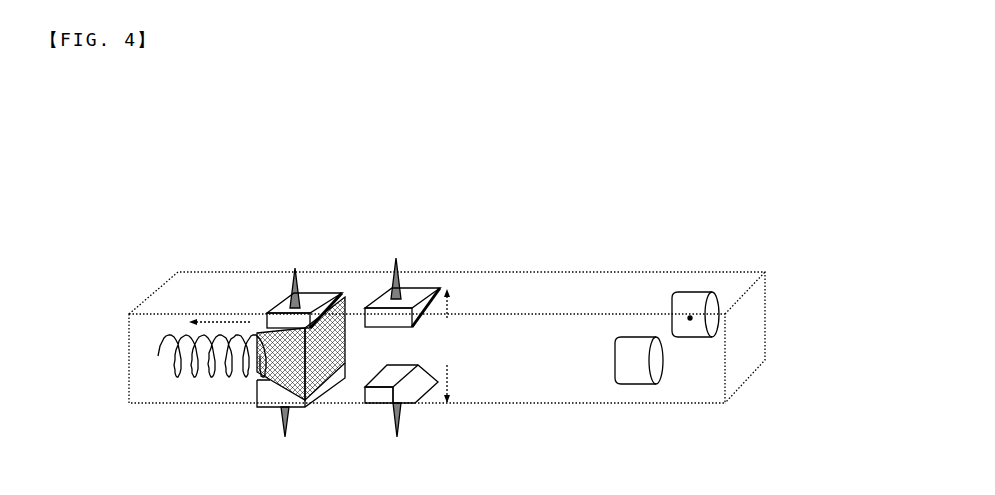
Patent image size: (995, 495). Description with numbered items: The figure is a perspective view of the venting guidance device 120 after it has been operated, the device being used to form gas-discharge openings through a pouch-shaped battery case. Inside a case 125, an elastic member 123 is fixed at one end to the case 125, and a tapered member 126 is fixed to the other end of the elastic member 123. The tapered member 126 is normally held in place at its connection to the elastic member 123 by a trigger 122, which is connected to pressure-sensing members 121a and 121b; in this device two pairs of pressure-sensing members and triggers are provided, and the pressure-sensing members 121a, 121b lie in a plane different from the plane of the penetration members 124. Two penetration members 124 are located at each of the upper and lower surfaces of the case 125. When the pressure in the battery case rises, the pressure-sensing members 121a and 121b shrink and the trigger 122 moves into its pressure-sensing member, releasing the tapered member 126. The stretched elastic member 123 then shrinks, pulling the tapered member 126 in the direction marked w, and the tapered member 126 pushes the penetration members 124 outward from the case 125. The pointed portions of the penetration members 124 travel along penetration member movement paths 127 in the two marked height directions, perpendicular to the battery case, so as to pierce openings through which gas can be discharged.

The venting guidance device 120 is at (117, 154).
The pressure-sensing member 121a is at (688, 298).
The pressure-sensing member 121b is at (628, 365).
The trigger 122 is at (692, 316).
The elastic member 123 is at (258, 340).
The penetration member 124 is at (286, 292).
The case 125 is at (129, 353).
The tapered member 126 is at (328, 372).
The penetration member movement path 127 is at (389, 285).